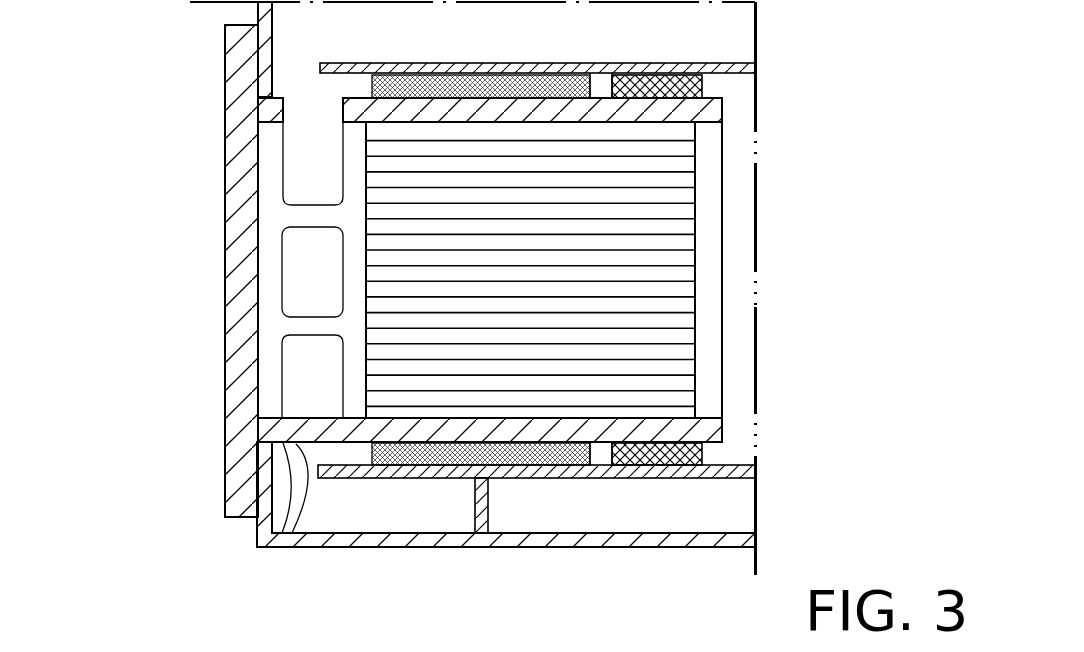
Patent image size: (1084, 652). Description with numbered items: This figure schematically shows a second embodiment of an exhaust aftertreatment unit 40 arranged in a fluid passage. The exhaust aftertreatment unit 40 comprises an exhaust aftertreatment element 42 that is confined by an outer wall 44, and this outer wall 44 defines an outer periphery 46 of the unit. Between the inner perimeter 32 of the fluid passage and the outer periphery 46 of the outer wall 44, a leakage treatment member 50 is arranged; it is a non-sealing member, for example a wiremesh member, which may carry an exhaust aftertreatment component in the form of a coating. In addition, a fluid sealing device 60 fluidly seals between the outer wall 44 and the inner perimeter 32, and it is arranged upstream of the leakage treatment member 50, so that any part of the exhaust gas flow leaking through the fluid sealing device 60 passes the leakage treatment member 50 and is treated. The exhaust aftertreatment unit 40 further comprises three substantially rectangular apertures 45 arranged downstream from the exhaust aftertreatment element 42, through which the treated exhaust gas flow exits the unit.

The exhaust aftertreatment unit 40 is at (140, 77).
The exhaust aftertreatment element 42 is at (657, 228).
The outer wall 44 is at (272, 547).
The substantially rectangular apertures 45 is at (293, 373).
The outer periphery 46 is at (283, 547).
The inner perimeter 32 is at (358, 478).
The leakage treatment member 50 is at (513, 480).
The fluid sealing device 60 is at (670, 480).